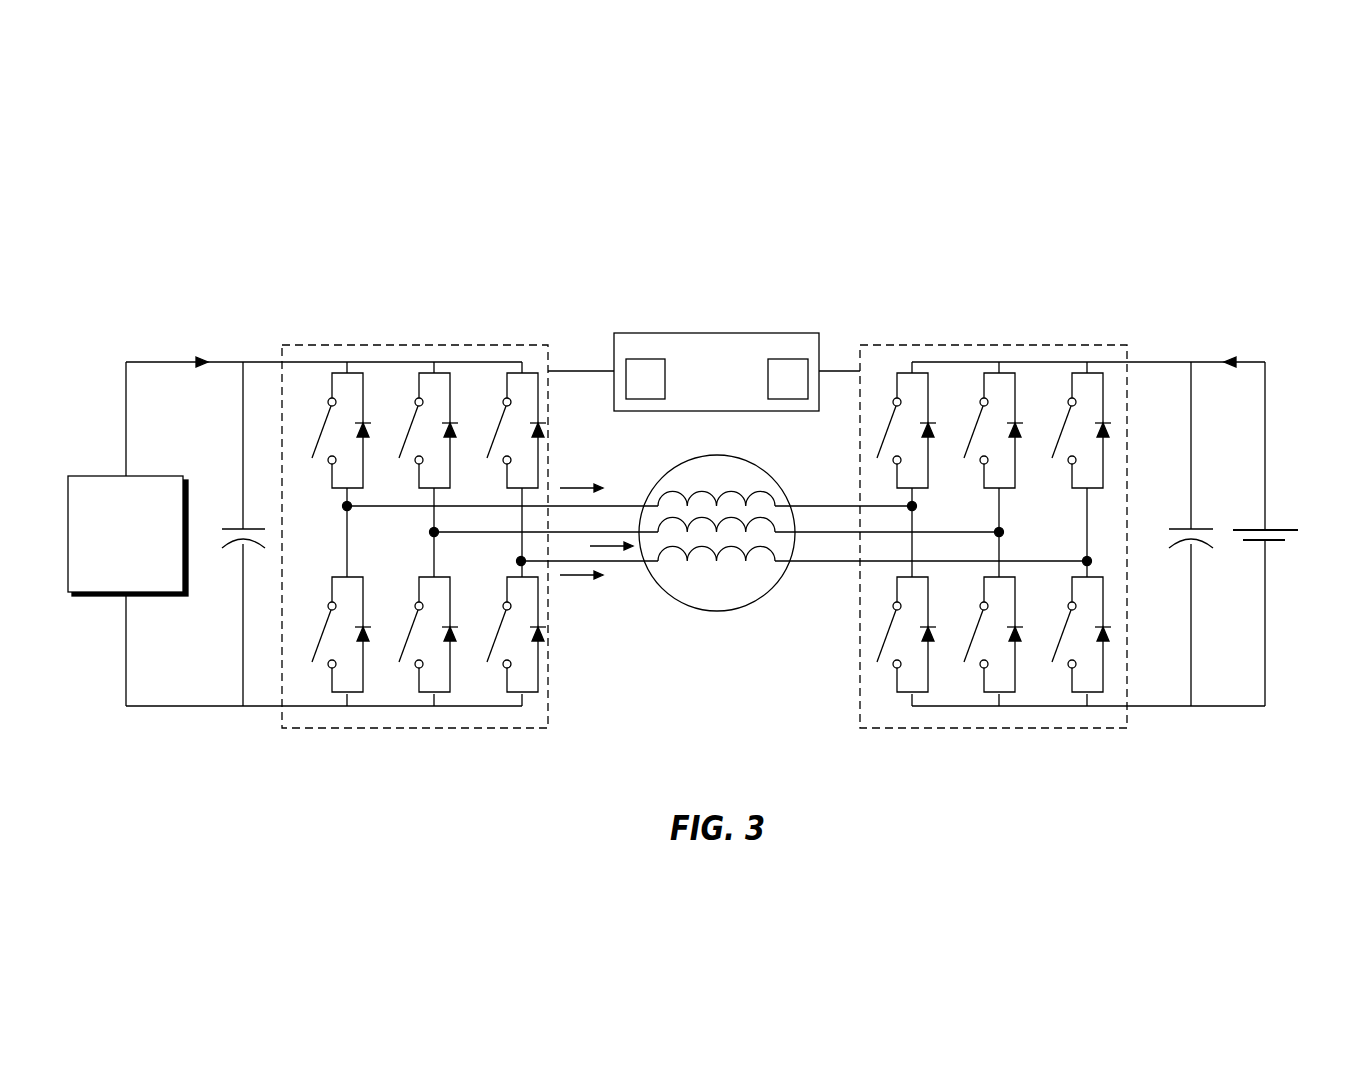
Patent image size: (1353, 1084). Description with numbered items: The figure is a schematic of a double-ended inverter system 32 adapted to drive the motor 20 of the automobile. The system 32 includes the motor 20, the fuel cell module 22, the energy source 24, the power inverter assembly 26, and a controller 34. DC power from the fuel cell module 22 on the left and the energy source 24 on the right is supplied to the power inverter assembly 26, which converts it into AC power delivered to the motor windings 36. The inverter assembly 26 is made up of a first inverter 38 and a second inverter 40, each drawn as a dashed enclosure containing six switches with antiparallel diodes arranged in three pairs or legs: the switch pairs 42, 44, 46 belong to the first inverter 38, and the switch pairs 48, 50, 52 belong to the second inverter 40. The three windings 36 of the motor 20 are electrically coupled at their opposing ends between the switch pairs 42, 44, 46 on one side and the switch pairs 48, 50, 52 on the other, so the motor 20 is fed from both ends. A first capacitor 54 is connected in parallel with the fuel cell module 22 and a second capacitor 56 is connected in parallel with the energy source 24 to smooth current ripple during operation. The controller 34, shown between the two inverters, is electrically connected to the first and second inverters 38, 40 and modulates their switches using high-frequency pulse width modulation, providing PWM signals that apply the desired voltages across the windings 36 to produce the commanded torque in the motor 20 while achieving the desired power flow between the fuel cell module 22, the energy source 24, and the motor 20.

The motor 20 is at (668, 467).
The fuel cell module 22 is at (85, 476).
The energy source 24 is at (1284, 516).
The power inverter assembly 26 is at (428, 324).
The double-ended inverter system 32 is at (1281, 227).
The controller 34 is at (706, 362).
The motor windings 36 is at (731, 549).
The first inverter 38 is at (318, 345).
The second inverter 40 is at (1105, 345).
The switch pair 42 is at (348, 716).
The switch pair 44 is at (435, 716).
The switch pair 46 is at (523, 716).
The switch pair 48 is at (911, 716).
The switch pair 50 is at (998, 716).
The switch pair 52 is at (1086, 716).
The first capacitor 54 is at (236, 543).
The second capacitor 56 is at (1201, 547).